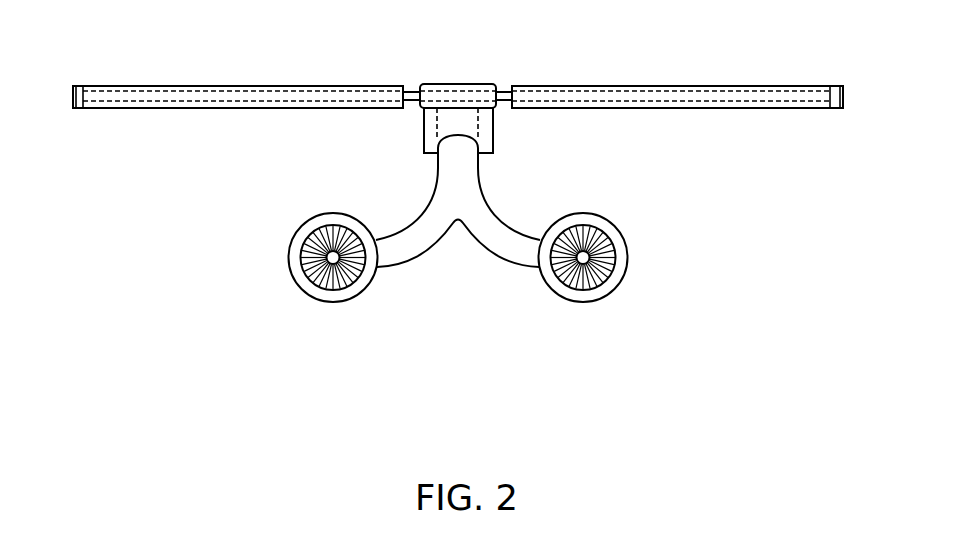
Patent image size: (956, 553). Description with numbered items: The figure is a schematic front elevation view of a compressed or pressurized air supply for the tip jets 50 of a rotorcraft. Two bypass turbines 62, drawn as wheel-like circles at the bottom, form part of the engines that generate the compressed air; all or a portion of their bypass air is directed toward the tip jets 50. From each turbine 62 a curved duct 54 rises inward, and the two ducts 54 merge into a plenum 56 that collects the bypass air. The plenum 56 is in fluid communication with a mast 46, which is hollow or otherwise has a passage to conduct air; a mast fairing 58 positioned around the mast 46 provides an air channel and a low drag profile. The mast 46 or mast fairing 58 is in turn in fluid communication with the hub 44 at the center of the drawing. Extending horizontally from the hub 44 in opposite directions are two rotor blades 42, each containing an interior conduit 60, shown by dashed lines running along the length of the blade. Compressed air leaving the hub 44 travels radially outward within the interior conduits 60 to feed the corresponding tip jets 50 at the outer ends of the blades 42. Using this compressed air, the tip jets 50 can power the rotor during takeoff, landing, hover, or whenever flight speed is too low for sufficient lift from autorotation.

The rotor blade 42 is at (237, 85).
The hub 44 is at (458, 84).
The mast 46 is at (478, 128).
The tip jet 50 is at (73, 97).
The duct 54 is at (413, 228).
The plenum 56 is at (470, 168).
The mast fairing 58 is at (424, 128).
The interior conduit 60 is at (172, 101).
The bypass turbine 62 is at (290, 249).